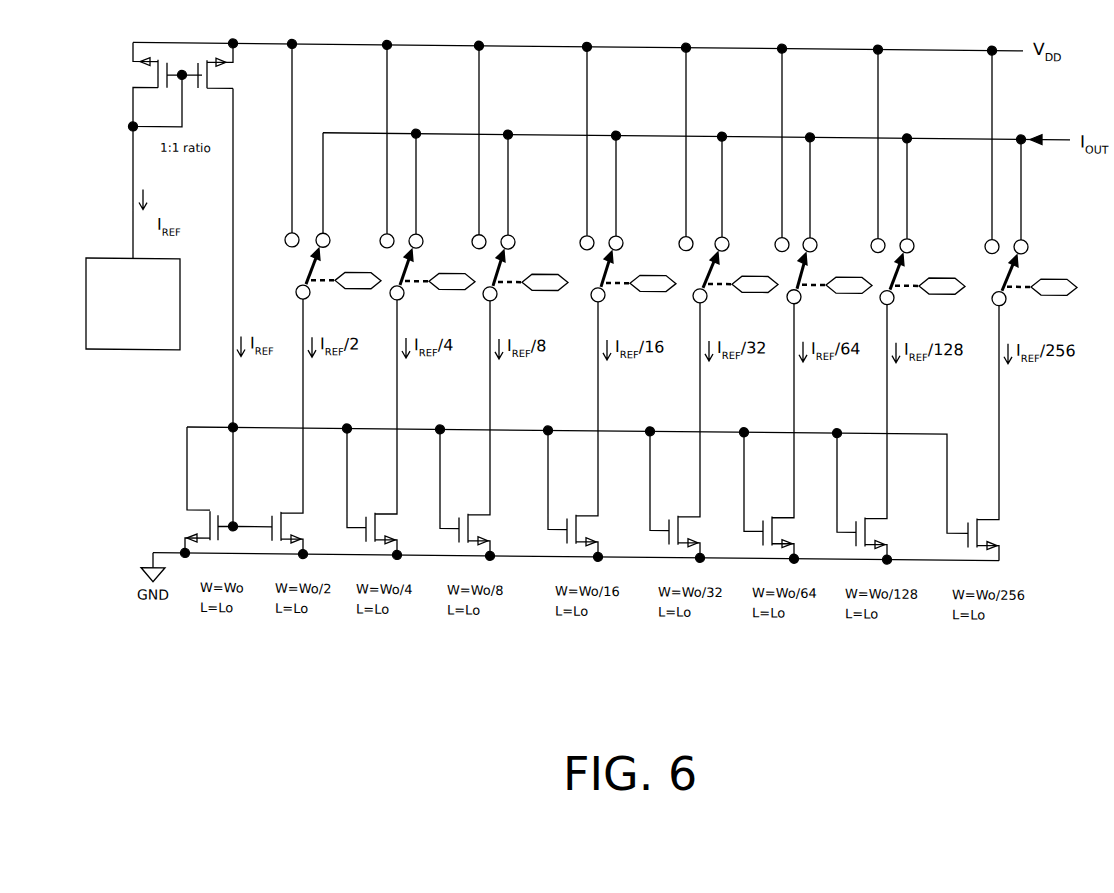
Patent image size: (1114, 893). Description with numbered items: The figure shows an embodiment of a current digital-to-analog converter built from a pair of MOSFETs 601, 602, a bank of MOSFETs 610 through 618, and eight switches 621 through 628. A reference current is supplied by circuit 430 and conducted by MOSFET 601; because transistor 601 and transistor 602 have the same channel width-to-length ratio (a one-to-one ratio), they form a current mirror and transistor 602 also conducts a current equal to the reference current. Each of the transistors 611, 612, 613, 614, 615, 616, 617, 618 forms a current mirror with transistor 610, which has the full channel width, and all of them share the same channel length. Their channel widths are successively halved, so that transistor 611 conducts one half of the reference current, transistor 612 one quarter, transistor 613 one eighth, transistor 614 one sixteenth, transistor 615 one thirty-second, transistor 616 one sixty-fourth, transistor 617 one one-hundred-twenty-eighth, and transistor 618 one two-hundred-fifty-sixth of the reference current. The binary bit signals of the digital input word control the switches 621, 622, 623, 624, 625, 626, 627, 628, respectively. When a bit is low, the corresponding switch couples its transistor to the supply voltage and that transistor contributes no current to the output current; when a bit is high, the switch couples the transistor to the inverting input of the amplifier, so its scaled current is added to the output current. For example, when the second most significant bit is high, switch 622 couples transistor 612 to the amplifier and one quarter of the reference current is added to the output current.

The circuit 430 is at (133, 304).
The MOSFET 601 is at (143, 84).
The MOSFET 602 is at (224, 88).
The transistor 610 is at (200, 513).
The transistor 611 is at (291, 508).
The transistor 612 is at (390, 508).
The transistor 613 is at (480, 517).
The transistor 614 is at (588, 517).
The transistor 615 is at (690, 517).
The transistor 616 is at (784, 517).
The transistor 617 is at (877, 517).
The transistor 618 is at (987, 517).
The switch 621 is at (305, 281).
The switch 622 is at (403, 284).
The switch 623 is at (496, 284).
The switch 624 is at (604, 284).
The switch 625 is at (706, 284).
The switch 626 is at (800, 284).
The switch 627 is at (893, 284).
The switch 628 is at (1005, 284).